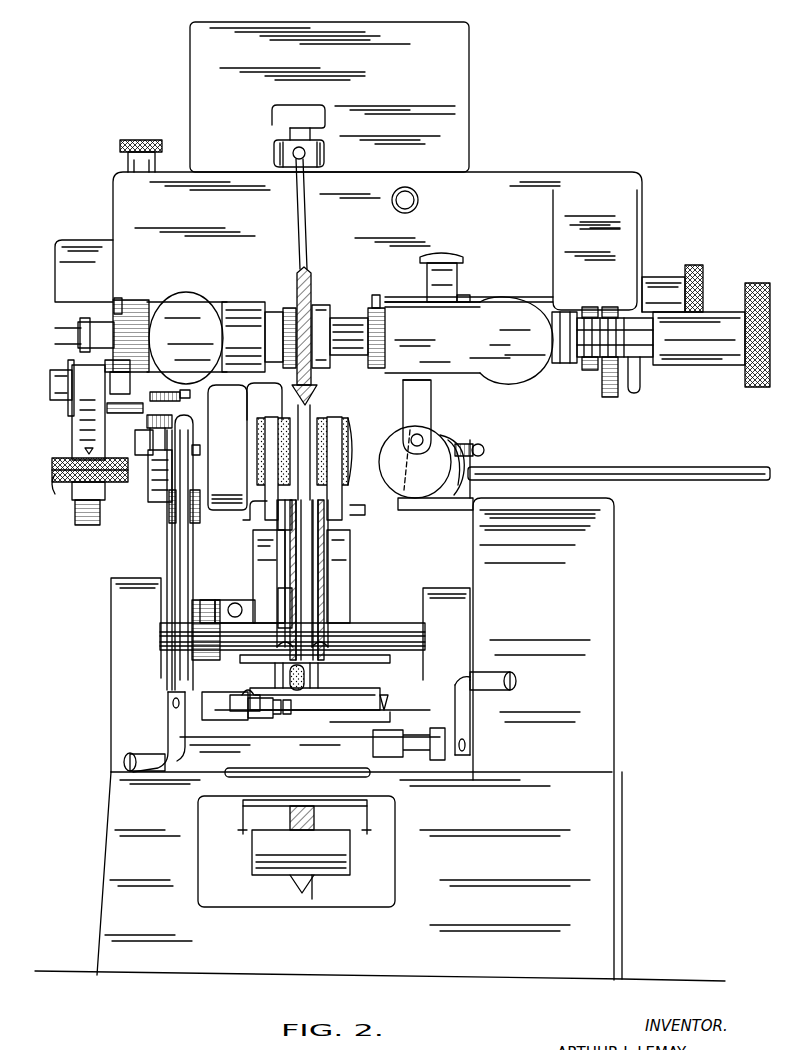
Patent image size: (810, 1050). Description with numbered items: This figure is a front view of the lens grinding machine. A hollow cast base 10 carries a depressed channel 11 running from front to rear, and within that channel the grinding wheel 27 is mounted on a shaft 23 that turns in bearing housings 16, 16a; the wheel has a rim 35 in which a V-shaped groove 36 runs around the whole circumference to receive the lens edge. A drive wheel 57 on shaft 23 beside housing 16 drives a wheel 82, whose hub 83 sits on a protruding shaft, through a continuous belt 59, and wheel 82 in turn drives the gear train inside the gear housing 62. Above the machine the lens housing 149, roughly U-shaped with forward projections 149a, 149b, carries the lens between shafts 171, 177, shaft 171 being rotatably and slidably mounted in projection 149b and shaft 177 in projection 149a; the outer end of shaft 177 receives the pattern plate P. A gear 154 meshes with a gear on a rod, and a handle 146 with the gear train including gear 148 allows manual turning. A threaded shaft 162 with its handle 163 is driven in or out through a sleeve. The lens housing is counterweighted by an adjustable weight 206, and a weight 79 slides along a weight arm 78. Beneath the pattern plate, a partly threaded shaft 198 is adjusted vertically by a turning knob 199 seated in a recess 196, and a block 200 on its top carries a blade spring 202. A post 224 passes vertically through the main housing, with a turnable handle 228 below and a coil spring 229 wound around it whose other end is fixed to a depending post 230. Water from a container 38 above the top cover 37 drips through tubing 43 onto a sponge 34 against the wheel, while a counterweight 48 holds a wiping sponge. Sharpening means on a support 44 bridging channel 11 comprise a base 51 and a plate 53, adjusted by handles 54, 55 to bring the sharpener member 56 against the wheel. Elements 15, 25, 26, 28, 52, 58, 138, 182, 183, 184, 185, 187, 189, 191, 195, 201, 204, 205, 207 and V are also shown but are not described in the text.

The base 10 is at (604, 880).
The depressed channel 11 is at (254, 900).
The upright block 15 is at (604, 578).
The bearing housing 16 is at (124, 576).
The bearing housing 16a is at (451, 564).
The shaft 23 is at (396, 622).
The slide member 25 is at (280, 588).
The left guide 26 is at (256, 550).
The grinding wheel 27 is at (318, 404).
The right guide 28 is at (338, 570).
The sponge 34 is at (346, 450).
The rim 35 is at (316, 900).
The V-shaped groove 36 is at (300, 890).
The top cover 37 is at (582, 171).
The water container 38 is at (457, 79).
The tubing 43 is at (297, 208).
The support 44 is at (380, 786).
The counterweight 48 is at (258, 855).
The base 51 is at (325, 770).
The slide plate 52 is at (310, 752).
The plate 53 is at (383, 692).
The handle 54 is at (472, 717).
The handle 55 is at (160, 722).
The sharpener member 56 is at (315, 670).
The drive wheel 57 is at (173, 580).
The bushing 58 is at (211, 596).
The continuous belt 59 is at (193, 545).
The gear housing 62 is at (252, 410).
The weight arm 78 is at (578, 458).
The weight 79 is at (468, 487).
The wheel 82 is at (194, 518).
The hub 83 is at (148, 508).
The sight opening 138 is at (418, 200).
The handle 146 is at (662, 278).
The gear 148 is at (612, 400).
The lens housing 149 is at (486, 400).
The forward projection 149a is at (188, 287).
The forward projection 149b is at (522, 300).
The gear 154 is at (590, 376).
The threaded shaft 162 is at (645, 345).
The handle 163 is at (708, 318).
The shaft 171 is at (380, 308).
The shaft 177 is at (278, 312).
The collar 182 is at (353, 314).
The collar 183 is at (322, 298).
The sleeve 184 is at (132, 300).
The flange 185 is at (92, 318).
The cap 187 is at (448, 260).
The plate 189 is at (463, 295).
The lug 191 is at (460, 295).
The stud 195 is at (52, 370).
The recess 196 is at (75, 446).
The partly threaded shaft 198 is at (75, 516).
The turning knob 199 is at (55, 467).
The block 200 is at (140, 378).
The bar 201 is at (125, 419).
The blade spring 202 is at (128, 367).
The link 204 is at (430, 396).
The disc 205 is at (415, 447).
The adjustable weight 206 is at (438, 439).
The screw 207 is at (480, 450).
The post 224 is at (146, 447).
The turnable handle 228 is at (57, 484).
The coil spring 229 is at (186, 428).
The post 230 is at (177, 397).
The pattern plate P is at (120, 296).
The spindle V is at (310, 278).